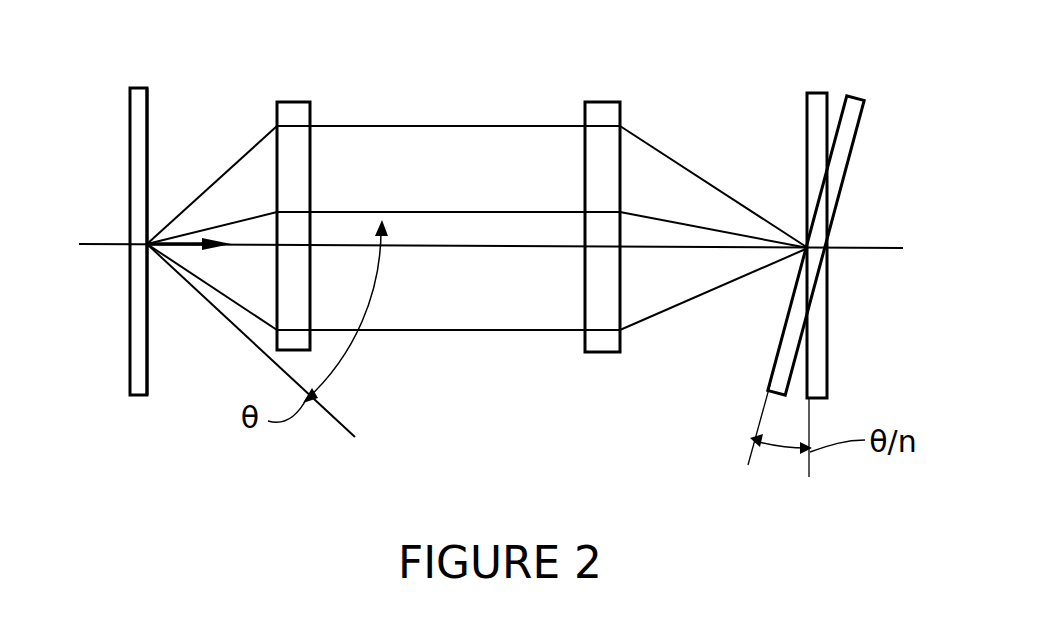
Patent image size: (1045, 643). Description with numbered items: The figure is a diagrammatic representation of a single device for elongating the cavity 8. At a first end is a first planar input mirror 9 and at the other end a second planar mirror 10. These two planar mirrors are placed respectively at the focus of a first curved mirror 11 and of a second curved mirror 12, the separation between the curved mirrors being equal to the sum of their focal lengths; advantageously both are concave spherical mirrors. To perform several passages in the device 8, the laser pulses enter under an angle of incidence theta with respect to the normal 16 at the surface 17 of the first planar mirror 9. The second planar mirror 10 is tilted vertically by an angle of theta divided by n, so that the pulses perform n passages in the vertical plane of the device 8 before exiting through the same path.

The device for elongating the cavity 8 is at (422, 82).
The first planar input mirror 9 is at (130, 327).
The second planar mirror 10 is at (862, 123).
The first curved mirror 11 is at (312, 115).
The second curved mirror 12 is at (622, 118).
The normal 16 is at (148, 113).
The surface 17 is at (190, 250).